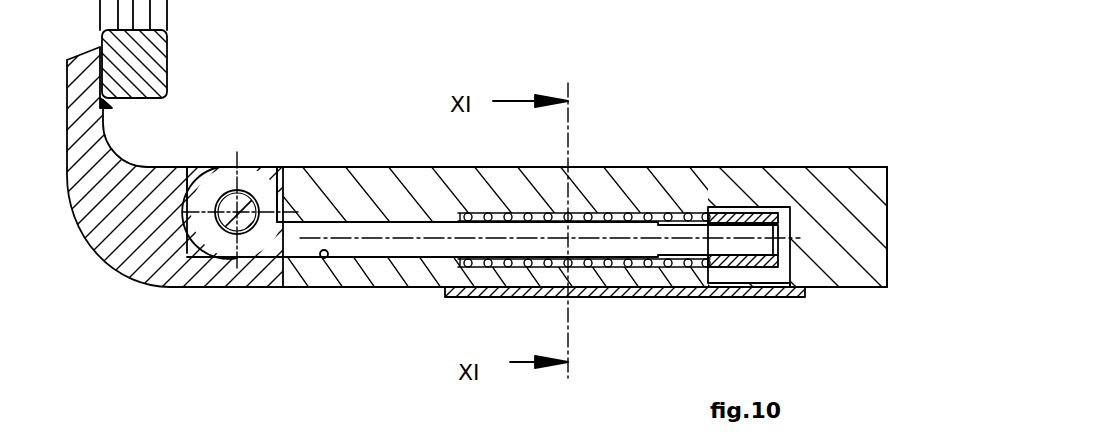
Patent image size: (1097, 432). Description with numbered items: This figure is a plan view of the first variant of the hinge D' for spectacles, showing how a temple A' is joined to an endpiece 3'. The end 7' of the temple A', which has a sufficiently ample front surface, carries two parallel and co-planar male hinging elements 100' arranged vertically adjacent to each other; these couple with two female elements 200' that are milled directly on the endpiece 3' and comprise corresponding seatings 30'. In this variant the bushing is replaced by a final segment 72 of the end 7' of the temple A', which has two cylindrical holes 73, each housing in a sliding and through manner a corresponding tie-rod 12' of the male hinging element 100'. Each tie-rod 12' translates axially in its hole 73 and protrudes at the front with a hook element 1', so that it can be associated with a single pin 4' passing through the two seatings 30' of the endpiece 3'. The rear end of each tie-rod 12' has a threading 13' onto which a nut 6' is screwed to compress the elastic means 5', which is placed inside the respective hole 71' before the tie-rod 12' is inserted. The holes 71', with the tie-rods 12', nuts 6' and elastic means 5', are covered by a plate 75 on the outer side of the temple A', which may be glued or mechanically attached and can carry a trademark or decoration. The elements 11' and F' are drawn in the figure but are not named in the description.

The hook element 1' is at (294, 168).
The endpiece 3' is at (176, 183).
The pin 4' is at (241, 265).
The elastic means 5' is at (584, 183).
The nut 6' is at (749, 191).
The end of the temple 7' is at (592, 183).
The pivot boss 11' is at (207, 253).
The tie-rod 12' is at (507, 297).
The threading 13' is at (746, 186).
The seating 30' is at (210, 146).
The hole 71' is at (799, 335).
The final segment 72 is at (413, 270).
The cylindrical hole 73 is at (322, 258).
The plate 75 is at (648, 300).
The male hinging element 100' is at (470, 345).
The female hinging element 200' is at (228, 109).
The temple A' is at (906, 181).
The hinge D' is at (425, 106).
The frame F' is at (135, 51).